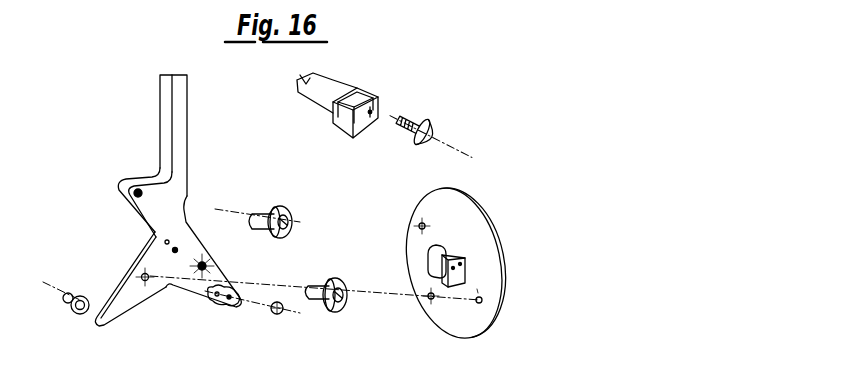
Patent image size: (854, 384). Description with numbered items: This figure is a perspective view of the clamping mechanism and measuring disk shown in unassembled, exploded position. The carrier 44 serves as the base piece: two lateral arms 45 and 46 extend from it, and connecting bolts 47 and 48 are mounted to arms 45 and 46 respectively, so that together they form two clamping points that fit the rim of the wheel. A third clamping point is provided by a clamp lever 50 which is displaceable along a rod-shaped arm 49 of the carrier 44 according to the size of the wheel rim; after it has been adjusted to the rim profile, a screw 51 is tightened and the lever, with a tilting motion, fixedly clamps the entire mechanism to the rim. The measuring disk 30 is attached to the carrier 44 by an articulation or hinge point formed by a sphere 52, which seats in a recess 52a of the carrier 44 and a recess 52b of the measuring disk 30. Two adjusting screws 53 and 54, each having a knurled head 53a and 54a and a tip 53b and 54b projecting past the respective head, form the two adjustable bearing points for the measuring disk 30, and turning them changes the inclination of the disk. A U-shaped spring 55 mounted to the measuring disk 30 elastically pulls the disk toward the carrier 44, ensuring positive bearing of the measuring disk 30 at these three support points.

The measuring disk 30 is at (485, 257).
The carrier 44 is at (124, 244).
The lateral arm 45 is at (125, 305).
The lateral arm 46 is at (195, 292).
The connecting bolt 47 is at (85, 316).
The connecting bolt 48 is at (225, 305).
The rod-shaped arm 49 is at (188, 122).
The clamp lever 50 is at (378, 100).
The screw 51 is at (430, 128).
The sphere 52 is at (280, 314).
The recess 52a is at (141, 276).
The recess 52b is at (481, 303).
The adjusting screw 53 is at (270, 210).
The knurled head 53a is at (274, 238).
The tip 53b is at (290, 217).
The adjusting screw 54 is at (318, 283).
The knurled head 54a is at (338, 312).
The tip 54b is at (344, 290).
The U-shaped spring 55 is at (445, 247).